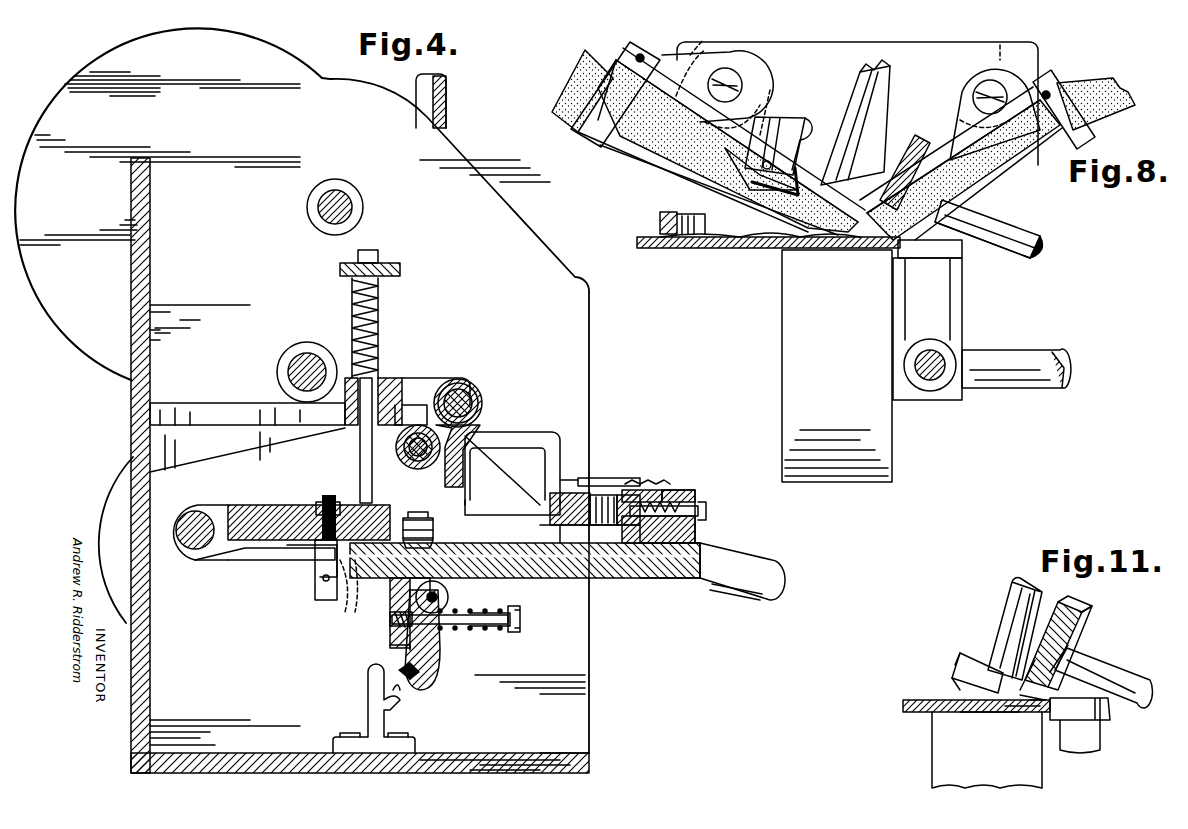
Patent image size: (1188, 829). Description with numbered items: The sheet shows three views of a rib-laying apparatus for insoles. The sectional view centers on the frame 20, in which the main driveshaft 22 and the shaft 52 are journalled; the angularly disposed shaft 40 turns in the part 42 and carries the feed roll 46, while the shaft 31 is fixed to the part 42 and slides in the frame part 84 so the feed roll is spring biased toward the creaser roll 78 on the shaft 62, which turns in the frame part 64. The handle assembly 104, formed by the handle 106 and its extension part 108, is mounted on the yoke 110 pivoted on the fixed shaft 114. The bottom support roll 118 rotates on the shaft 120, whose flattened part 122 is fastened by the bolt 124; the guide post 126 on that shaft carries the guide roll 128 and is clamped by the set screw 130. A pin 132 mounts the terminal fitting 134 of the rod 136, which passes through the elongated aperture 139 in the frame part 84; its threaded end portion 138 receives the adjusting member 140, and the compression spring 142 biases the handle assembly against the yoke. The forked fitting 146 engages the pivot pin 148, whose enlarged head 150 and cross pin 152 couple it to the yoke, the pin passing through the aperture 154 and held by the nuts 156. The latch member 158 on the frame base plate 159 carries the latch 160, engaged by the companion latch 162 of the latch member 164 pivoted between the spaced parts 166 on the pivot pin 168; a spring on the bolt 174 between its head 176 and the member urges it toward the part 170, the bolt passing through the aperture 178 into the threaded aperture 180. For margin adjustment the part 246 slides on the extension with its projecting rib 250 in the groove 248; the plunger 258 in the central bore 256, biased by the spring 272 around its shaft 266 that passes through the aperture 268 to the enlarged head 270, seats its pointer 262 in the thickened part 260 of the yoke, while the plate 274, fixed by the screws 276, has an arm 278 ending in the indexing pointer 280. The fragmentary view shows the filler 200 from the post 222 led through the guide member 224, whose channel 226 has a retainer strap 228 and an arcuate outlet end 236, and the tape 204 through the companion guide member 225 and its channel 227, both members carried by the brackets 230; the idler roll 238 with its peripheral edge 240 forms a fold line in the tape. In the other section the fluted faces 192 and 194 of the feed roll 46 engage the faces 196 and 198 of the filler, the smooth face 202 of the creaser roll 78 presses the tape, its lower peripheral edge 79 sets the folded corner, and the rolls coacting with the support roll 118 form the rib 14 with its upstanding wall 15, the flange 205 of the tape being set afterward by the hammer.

In FIG. 4, the frame 20 is at (130, 406).
In FIG. 4, the main driveshaft 22 is at (313, 353).
In FIG. 4, the shaft 31 is at (470, 388).
In FIG. 4, the shaft 40 is at (405, 455).
In FIG. 8, the shaft 40 is at (1040, 245).
In FIG. 11, the shaft 40 is at (1110, 675).
In FIG. 4, the part 42 is at (440, 388).
In FIG. 4, the shaft 52 is at (340, 192).
In FIG. 4, the frame part 84 is at (232, 412).
In FIG. 4, the handle assembly 104 is at (562, 583).
In FIG. 4, the handle 106 is at (768, 572).
In FIG. 4, the extension part 108 is at (592, 583).
In FIG. 4, the yoke 110 is at (240, 560).
In FIG. 4, the fixed shaft 114 is at (200, 510).
In FIG. 4, the flattened part 122 is at (412, 518).
In FIG. 4, the bolt 124 is at (430, 520).
In FIG. 4, the pin 132 is at (396, 598).
In FIG. 4, the terminal fitting 134 is at (348, 600).
In FIG. 4, the rod 136 is at (360, 440).
In FIG. 4, the threaded end portion 138 is at (376, 255).
In FIG. 4, the elongated aperture 139 is at (385, 378).
In FIG. 4, the adjusting member 140 is at (398, 268).
In FIG. 4, the compression spring 142 is at (380, 312).
In FIG. 4, the forked fitting 146 is at (290, 565).
In FIG. 4, the pivot pin 148 is at (338, 498).
In FIG. 4, the enlarged head 150 is at (318, 600).
In FIG. 4, the cross pin 152 is at (322, 580).
In FIG. 4, the aperture 154 is at (320, 515).
In FIG. 4, the nuts 156 is at (318, 490).
In FIG. 4, the latch member 158 is at (368, 716).
In FIG. 4, the frame base plate 159 is at (548, 753).
In FIG. 4, the latch 160 is at (400, 685).
In FIG. 4, the companion latch 162 is at (405, 672).
In FIG. 4, the latch member 164 is at (440, 666).
In FIG. 4, the spaced parts 166 is at (470, 593).
In FIG. 4, the pivot pin 168 is at (410, 596).
In FIG. 4, the part 170 is at (392, 645).
In FIG. 4, the bolt 174 is at (508, 618).
In FIG. 4, the head 176 is at (515, 630).
In FIG. 4, the aperture 178 is at (432, 637).
In FIG. 4, the threaded aperture 180 is at (390, 631).
In FIG. 4, the post 222 is at (446, 108).
In FIG. 4, the part 246 is at (698, 524).
In FIG. 4, the groove 248 is at (680, 580).
In FIG. 4, the projecting rib 250 is at (660, 582).
In FIG. 4, the central bore 256 is at (700, 541).
In FIG. 4, the plunger 258 is at (612, 527).
In FIG. 4, the thickened part 260 is at (548, 527).
In FIG. 4, the pointer 262 is at (580, 527).
In FIG. 4, the shaft 266 is at (665, 495).
In FIG. 4, the aperture 268 is at (690, 495).
In FIG. 4, the enlarged head 270 is at (705, 510).
In FIG. 4, the spring 272 is at (630, 490).
In FIG. 4, the plate 274 is at (685, 490).
In FIG. 4, the screws 276 is at (640, 480).
In FIG. 4, the arm 278 is at (600, 480).
In FIG. 4, the indexing pointer 280 is at (578, 482).
In FIG. 8, the tape 204 is at (592, 58).
In FIG. 11, the tape 204 is at (962, 698).
In FIG. 8, the flange 205 is at (700, 248).
In FIG. 8, the guide member 224 is at (1035, 165).
In FIG. 8, the guide member 225 is at (650, 165).
In FIG. 8, the channel 226 is at (800, 60).
In FIG. 8, the channel 227 is at (620, 155).
In FIG. 8, the retainer strap 228 is at (1060, 100).
In FIG. 8, the brackets 230 is at (700, 55).
In FIG. 8, the outlet end 236 is at (912, 250).
In FIG. 8, the idler roll 238 is at (735, 188).
In FIG. 8, the peripheral edge 240 is at (765, 125).
In FIG. 8, the shaft 62 is at (862, 125).
In FIG. 11, the shaft 62 is at (998, 608).
In FIG. 8, the frame part 64 is at (862, 86).
In FIG. 8, the feed roll 46 is at (915, 145).
In FIG. 11, the feed roll 46 is at (1085, 628).
In FIG. 8, the bottom support roll 118 is at (800, 340).
In FIG. 11, the bottom support roll 118 is at (942, 760).
In FIG. 8, the shaft 120 is at (1025, 378).
In FIG. 8, the guide post 126 is at (940, 310).
In FIG. 8, the guide roll 128 is at (952, 258).
In FIG. 11, the guide roll 128 is at (1112, 716).
In FIG. 8, the set screw 130 is at (935, 380).
In FIG. 8, the filler strip 200 is at (1125, 98).
In FIG. 11, the filler strip 200 is at (1005, 714).
In FIG. 11, the rib 14 is at (990, 714).
In FIG. 11, the upstanding wall 15 is at (1027, 660).
In FIG. 11, the creaser roll 78 is at (960, 668).
In FIG. 11, the lower peripheral edge 79 is at (952, 678).
In FIG. 11, the active face 192 is at (1063, 607).
In FIG. 11, the active face 194 is at (1088, 612).
In FIG. 11, the face 196 is at (1072, 650).
In FIG. 11, the face 198 is at (1049, 686).
In FIG. 11, the active face 202 is at (972, 660).